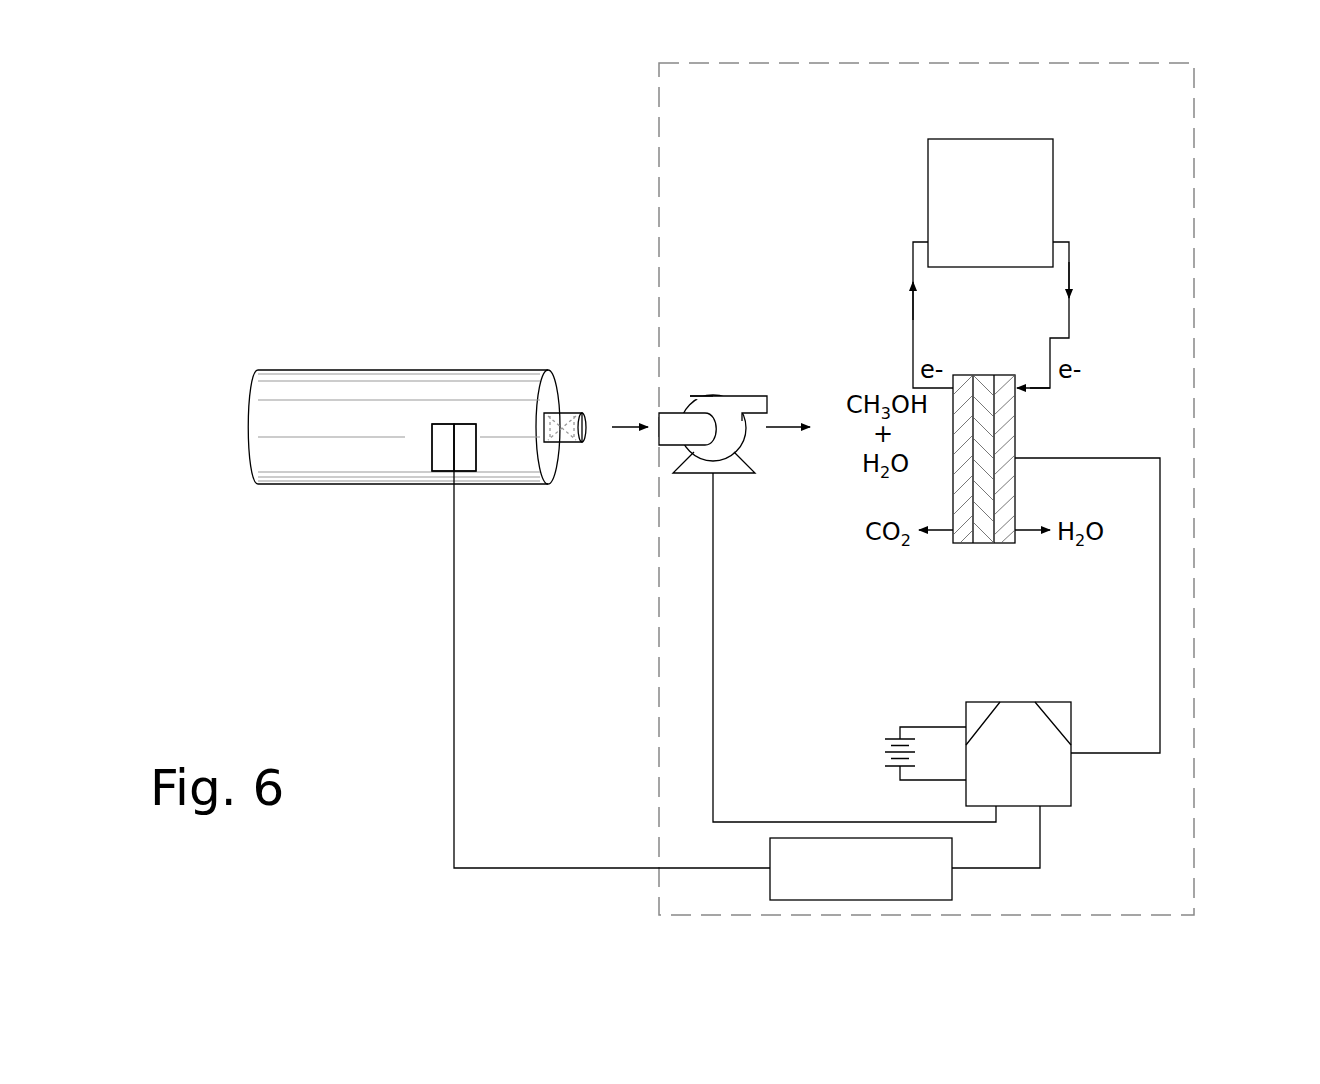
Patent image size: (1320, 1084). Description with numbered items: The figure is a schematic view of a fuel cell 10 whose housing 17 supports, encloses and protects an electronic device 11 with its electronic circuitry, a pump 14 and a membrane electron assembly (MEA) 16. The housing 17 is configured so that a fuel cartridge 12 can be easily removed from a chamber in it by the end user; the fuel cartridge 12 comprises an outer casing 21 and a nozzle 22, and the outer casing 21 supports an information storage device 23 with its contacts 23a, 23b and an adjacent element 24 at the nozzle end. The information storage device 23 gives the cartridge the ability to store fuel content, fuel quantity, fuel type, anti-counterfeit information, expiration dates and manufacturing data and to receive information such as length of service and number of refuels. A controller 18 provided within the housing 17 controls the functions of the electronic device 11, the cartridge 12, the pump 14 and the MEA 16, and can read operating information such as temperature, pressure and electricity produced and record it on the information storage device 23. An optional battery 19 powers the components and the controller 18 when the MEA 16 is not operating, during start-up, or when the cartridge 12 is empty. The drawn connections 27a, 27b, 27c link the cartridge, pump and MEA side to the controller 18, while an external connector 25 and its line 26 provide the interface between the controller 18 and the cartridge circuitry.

The fuel cell 10 is at (557, 612).
The electronic device 11 is at (995, 136).
The fuel cartridge 12 is at (404, 388).
The pump 14 is at (722, 390).
The membrane electron assembly (MEA) 16 is at (983, 550).
The housing 17 is at (1194, 620).
The controller 18 is at (1018, 754).
The battery 19 is at (885, 756).
The outer casing 21 is at (356, 392).
The nozzle 22 is at (568, 412).
The information storage device 23 is at (437, 485).
The first contact 23a is at (441, 458).
The second contact 23b is at (465, 458).
The outlet 24 is at (570, 442).
The external connector 25 is at (953, 853).
The connector wire 26 is at (1040, 841).
The wire 27a is at (555, 868).
The wire 27b is at (713, 762).
The wire 27c is at (1160, 563).